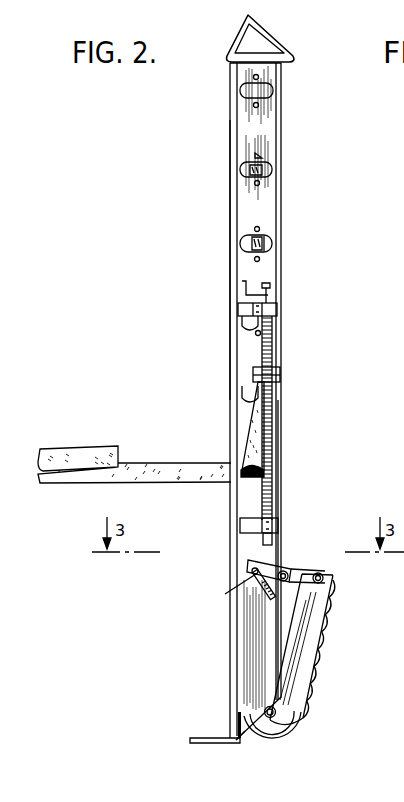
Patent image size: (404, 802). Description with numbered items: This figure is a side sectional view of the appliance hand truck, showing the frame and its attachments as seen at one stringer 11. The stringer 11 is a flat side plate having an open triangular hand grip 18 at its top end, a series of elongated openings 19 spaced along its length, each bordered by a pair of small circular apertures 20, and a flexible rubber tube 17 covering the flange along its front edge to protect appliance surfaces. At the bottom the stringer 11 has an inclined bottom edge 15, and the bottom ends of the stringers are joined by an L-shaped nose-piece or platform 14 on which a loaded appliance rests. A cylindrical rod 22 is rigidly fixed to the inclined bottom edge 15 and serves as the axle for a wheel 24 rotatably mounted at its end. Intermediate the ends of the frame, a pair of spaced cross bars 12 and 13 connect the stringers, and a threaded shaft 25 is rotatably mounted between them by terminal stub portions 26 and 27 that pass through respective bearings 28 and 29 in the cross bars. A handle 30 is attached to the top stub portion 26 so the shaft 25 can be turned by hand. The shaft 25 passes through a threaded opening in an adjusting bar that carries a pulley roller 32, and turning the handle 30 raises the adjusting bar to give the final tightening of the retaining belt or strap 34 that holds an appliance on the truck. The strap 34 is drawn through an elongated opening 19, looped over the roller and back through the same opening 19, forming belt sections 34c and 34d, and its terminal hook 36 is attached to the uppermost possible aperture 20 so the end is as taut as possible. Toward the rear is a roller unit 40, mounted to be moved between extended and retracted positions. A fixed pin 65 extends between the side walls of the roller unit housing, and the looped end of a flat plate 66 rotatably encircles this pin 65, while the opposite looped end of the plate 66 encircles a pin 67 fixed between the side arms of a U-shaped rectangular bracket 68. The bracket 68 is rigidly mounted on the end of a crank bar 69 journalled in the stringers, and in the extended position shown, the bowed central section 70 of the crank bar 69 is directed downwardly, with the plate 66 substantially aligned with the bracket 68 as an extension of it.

The stringer 11 is at (270, 213).
The cross bar 12 is at (240, 311).
The cross bar 13 is at (240, 528).
The L-shaped nose-piece or platform 14 is at (203, 737).
The inclined bottom edge 15 is at (243, 741).
The tube 17 is at (233, 255).
The open triangular hand grip 18 is at (278, 45).
The elongated opening 19 is at (247, 93).
The small circular aperture 20 is at (260, 105).
The cylindrical rod 22 is at (271, 716).
The wheel 24 is at (303, 733).
The threaded shaft 25 is at (272, 352).
The terminal stub portion 26 is at (270, 291).
The terminal stub portion 27 is at (275, 546).
The bearing 28 is at (270, 311).
The bearing 29 is at (280, 518).
The handle 30 is at (242, 281).
The pulley roller 32 is at (282, 375).
The retaining belt or strap 34 is at (148, 467).
The belt section 34c is at (258, 423).
The belt section 34d is at (255, 442).
The hook 36 is at (266, 161).
The roller unit 40 is at (328, 633).
The fixed pin 65 is at (324, 572).
The flat plate 66 is at (304, 570).
The pin 67 is at (285, 583).
The rectangular bracket 68 is at (277, 563).
The crank bar 69 is at (256, 574).
The bowed central section 70 is at (270, 600).